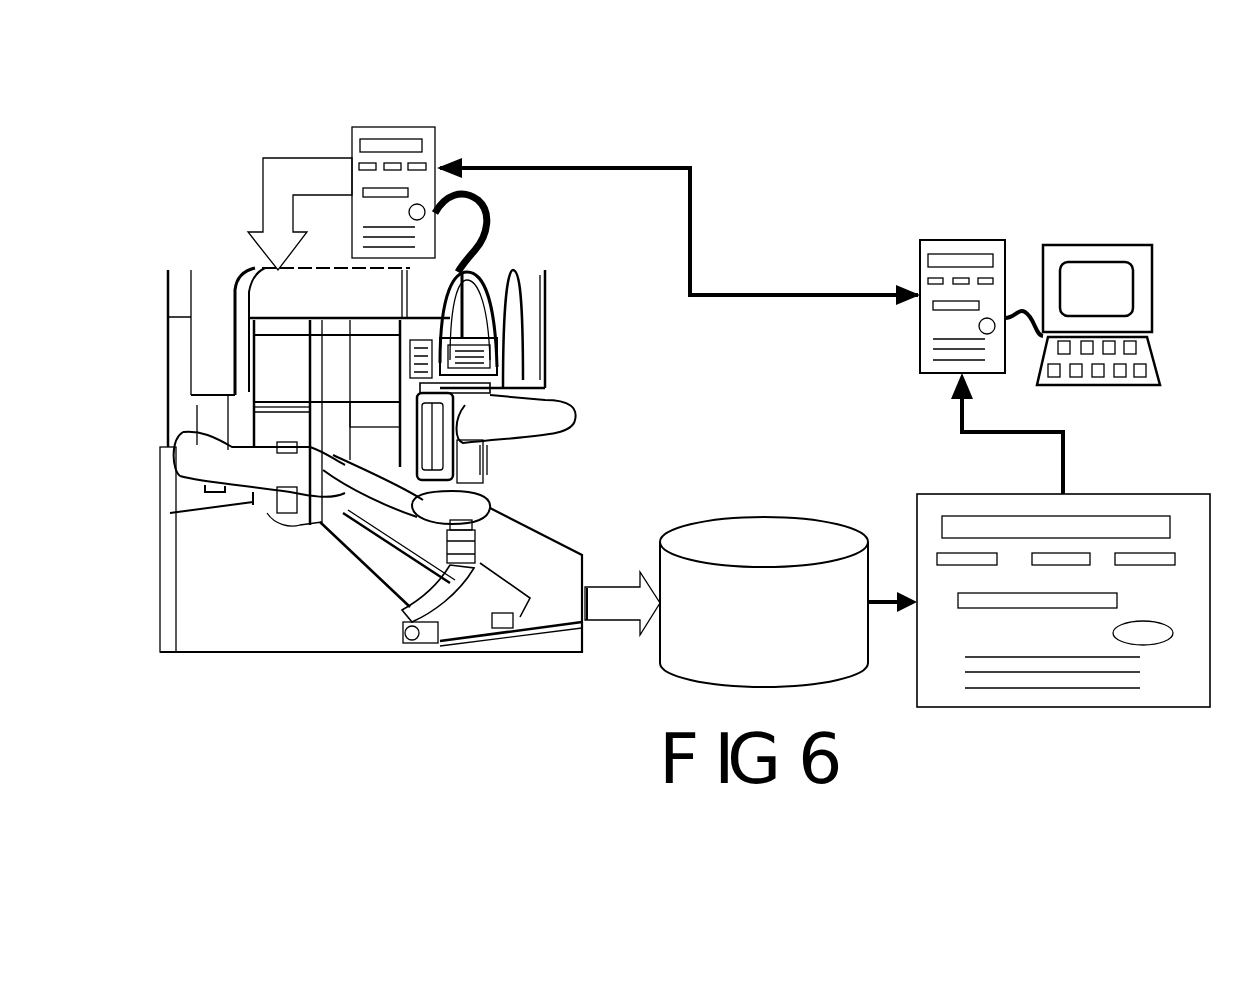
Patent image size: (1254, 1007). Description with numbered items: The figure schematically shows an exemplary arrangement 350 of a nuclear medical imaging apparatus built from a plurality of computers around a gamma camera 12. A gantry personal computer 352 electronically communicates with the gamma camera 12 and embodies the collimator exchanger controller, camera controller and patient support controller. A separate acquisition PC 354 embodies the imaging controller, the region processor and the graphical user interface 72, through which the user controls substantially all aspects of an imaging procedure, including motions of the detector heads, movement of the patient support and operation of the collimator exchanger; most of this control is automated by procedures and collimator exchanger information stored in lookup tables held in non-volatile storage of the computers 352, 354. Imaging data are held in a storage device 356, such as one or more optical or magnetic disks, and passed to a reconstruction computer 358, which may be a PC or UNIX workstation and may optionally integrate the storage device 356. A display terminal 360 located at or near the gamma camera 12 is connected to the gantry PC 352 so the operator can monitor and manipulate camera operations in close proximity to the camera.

The arrangement 350 is at (899, 172).
The gantry personal computer 352 is at (388, 125).
The gamma camera 12 is at (387, 676).
The display terminal 360 is at (500, 346).
The storage device 356 is at (755, 516).
The acquisition personal computer 354 is at (920, 337).
The graphical user interface 72 is at (1157, 280).
The reconstruction computer 358 is at (1137, 707).